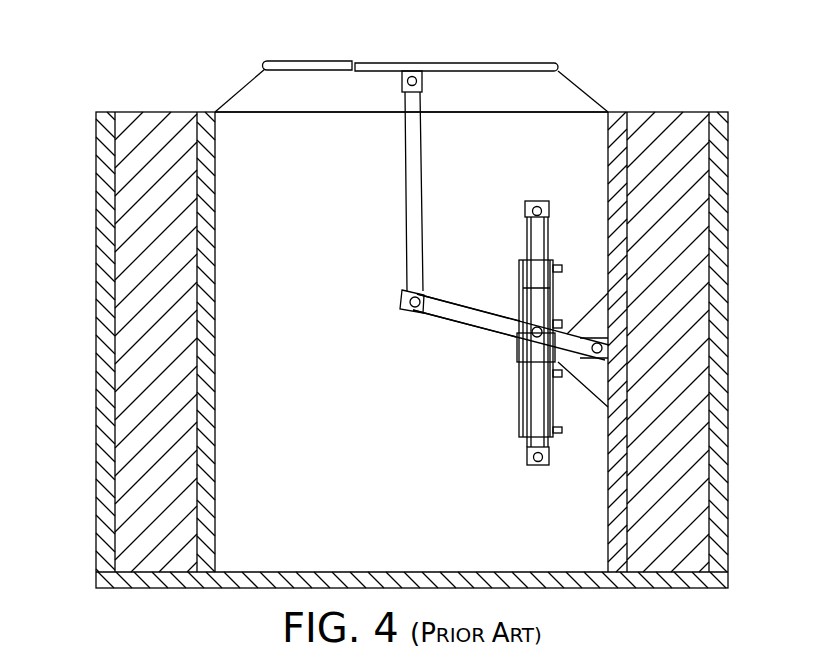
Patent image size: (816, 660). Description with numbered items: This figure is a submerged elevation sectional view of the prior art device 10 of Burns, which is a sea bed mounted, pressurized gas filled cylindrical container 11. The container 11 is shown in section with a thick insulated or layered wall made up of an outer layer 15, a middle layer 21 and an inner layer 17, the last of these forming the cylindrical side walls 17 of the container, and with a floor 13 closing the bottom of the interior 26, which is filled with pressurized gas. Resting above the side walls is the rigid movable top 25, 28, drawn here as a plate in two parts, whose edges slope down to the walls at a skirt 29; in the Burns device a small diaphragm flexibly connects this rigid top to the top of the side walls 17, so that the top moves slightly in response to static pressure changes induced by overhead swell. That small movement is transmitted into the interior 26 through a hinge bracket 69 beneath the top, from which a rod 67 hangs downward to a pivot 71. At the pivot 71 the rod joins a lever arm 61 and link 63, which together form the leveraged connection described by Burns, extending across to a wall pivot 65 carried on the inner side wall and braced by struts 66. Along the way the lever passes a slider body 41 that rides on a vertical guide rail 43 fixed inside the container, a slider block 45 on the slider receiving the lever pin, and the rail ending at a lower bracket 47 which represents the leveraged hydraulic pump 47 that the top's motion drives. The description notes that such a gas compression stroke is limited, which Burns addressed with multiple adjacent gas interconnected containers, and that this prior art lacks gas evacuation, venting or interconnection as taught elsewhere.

The prior art container assembly 10 is at (198, 76).
The cylindrical container 11 is at (93, 186).
The floor 13 is at (607, 582).
The outer wall layer 15 is at (718, 491).
The cylindrical side walls 17 is at (618, 536).
The insulation wall 21 is at (668, 428).
The rigid movable top 25 is at (300, 61).
The interior cavity 26 is at (276, 166).
The rigid movable top 28 is at (478, 63).
The lid skirt 29 is at (582, 86).
The slider body 41 is at (553, 282).
The guide rail 43 is at (553, 296).
The slider block 45 is at (545, 312).
The hydraulic pump 47 is at (551, 410).
The lever arm 61 is at (433, 319).
The lever 63 is at (490, 335).
The wall pivot 65 is at (608, 352).
The support struts 66 is at (600, 378).
The rod 67 is at (407, 256).
The hinge bracket 69 is at (412, 76).
The pivot 71 is at (410, 311).